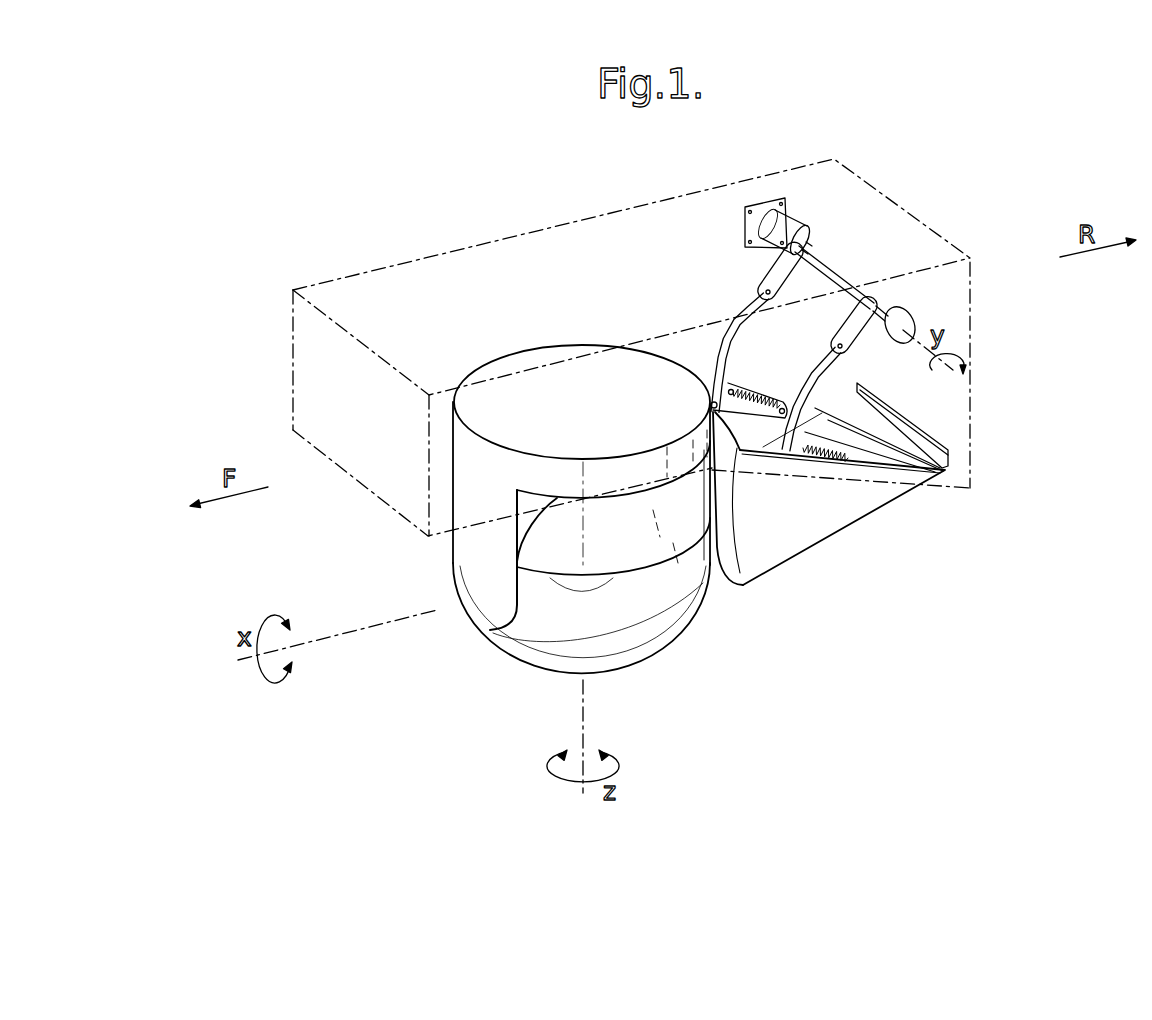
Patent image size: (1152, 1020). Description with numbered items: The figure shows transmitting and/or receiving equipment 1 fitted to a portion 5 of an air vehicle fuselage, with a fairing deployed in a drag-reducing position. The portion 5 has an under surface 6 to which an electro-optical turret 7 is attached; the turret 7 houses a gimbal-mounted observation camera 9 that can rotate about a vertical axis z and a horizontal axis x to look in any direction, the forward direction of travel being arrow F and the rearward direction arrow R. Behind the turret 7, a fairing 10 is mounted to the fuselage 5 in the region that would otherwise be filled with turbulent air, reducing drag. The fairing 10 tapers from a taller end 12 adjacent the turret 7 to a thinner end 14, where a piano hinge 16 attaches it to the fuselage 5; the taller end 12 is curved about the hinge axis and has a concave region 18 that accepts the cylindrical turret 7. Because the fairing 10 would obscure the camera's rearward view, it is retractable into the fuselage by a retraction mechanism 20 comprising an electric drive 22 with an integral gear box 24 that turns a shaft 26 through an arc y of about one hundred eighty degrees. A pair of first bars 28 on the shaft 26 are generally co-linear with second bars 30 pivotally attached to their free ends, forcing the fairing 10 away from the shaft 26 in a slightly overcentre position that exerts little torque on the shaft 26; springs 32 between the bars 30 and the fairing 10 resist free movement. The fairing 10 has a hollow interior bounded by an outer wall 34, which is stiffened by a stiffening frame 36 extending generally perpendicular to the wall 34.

The transmitting and/or receiving equipment 1 is at (222, 248).
The portion of an air vehicle fuselage 5 is at (412, 262).
The under surface 6 is at (366, 490).
The turret 7 is at (484, 608).
The observation camera 9 is at (637, 617).
The fairing 10 is at (808, 548).
The taller end 12 is at (738, 582).
The thinner end 14 is at (930, 478).
The piano hinge 16 is at (892, 415).
The concave region 18 is at (717, 395).
The retraction mechanism 20 is at (708, 224).
The electric drive 22 is at (758, 203).
The gear box 24 is at (788, 228).
The shaft 26 is at (838, 282).
The first bars 28 is at (760, 273).
The second bars 30 is at (723, 350).
The springs 32 is at (762, 396).
The outer wall 34 is at (782, 521).
The stiffening frame 36 is at (865, 452).